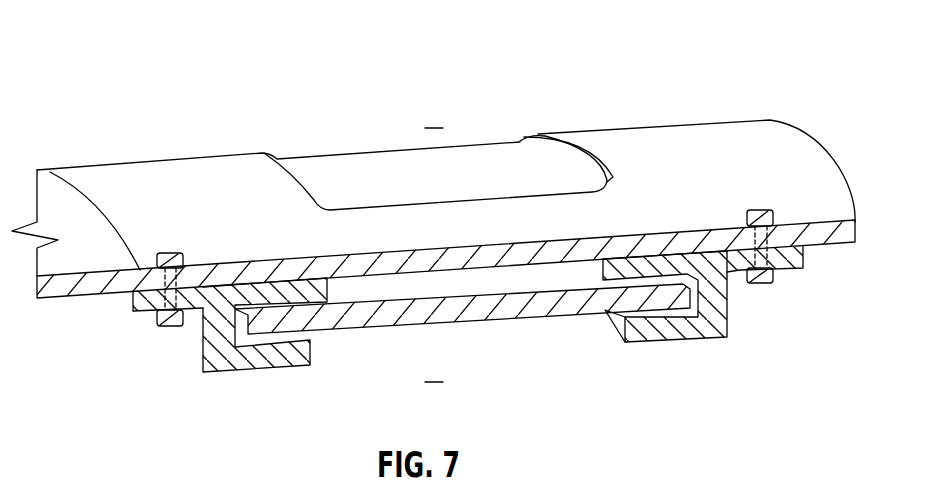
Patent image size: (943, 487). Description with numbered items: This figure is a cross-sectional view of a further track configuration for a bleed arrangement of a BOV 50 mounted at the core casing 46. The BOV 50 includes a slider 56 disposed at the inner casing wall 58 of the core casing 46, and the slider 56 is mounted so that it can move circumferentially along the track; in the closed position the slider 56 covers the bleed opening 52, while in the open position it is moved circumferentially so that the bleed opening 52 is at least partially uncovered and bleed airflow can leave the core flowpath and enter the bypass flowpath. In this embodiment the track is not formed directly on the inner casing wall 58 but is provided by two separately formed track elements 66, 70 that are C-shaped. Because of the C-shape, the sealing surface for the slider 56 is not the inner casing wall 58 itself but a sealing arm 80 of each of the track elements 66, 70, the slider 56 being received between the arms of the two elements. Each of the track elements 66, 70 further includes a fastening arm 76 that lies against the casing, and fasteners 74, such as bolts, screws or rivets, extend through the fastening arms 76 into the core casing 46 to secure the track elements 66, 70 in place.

The core casing 46 is at (753, 142).
The BOV 50 is at (149, 60).
The bleed opening 52 is at (570, 140).
The slider 56 is at (480, 307).
The inner casing wall 58 is at (54, 284).
The track element 66 is at (268, 362).
The track element 70 is at (670, 328).
The fastener 74 is at (168, 323).
The fastening arm 76 is at (143, 307).
The sealing arm 80 is at (277, 262).